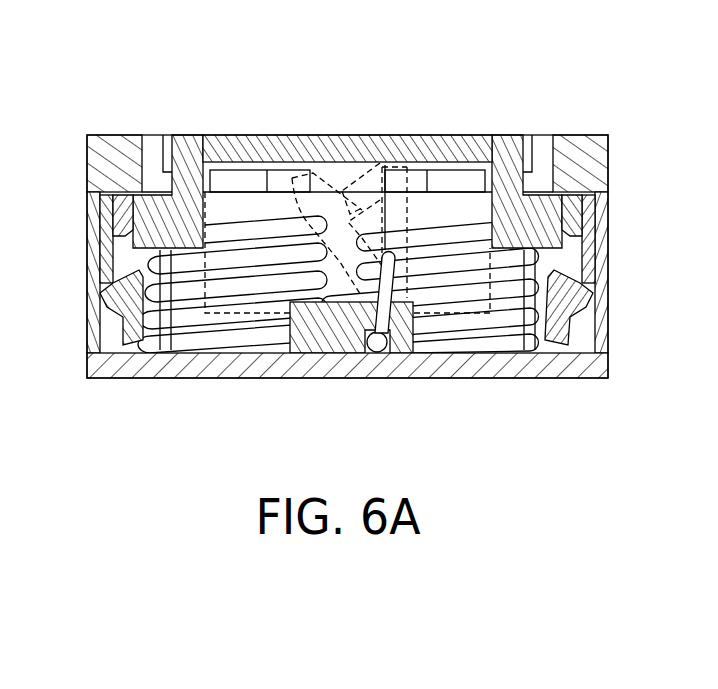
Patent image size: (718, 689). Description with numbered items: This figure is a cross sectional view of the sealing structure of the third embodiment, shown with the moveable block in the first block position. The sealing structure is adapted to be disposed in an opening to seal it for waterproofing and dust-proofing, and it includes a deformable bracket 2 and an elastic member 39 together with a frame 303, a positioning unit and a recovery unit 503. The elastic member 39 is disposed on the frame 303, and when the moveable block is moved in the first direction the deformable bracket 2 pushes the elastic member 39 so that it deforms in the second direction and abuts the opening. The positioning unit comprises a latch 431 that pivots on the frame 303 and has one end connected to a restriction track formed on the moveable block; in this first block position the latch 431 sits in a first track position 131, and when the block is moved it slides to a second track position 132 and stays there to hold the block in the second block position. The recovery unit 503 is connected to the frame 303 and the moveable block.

The deformable bracket 2 is at (577, 253).
The elastic member 39 is at (88, 331).
The first track position 131 is at (392, 240).
The second track position 132 is at (342, 191).
The frame 303 is at (147, 380).
The latch 431 is at (377, 352).
The recovery unit 503 is at (253, 350).